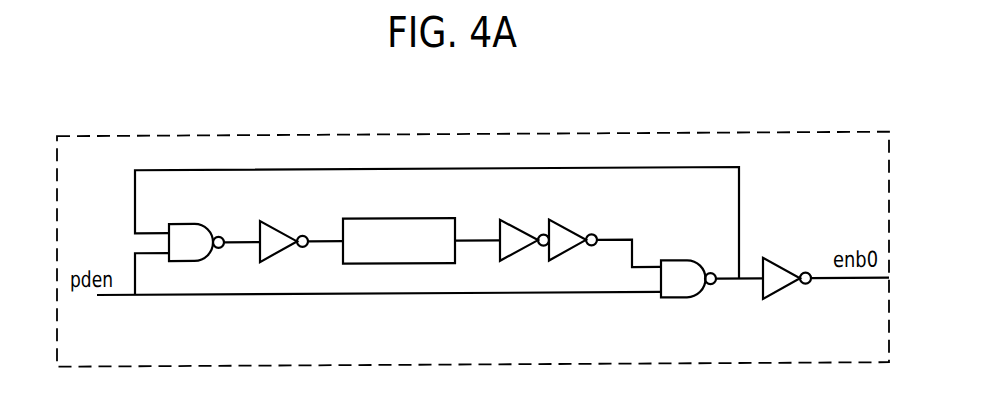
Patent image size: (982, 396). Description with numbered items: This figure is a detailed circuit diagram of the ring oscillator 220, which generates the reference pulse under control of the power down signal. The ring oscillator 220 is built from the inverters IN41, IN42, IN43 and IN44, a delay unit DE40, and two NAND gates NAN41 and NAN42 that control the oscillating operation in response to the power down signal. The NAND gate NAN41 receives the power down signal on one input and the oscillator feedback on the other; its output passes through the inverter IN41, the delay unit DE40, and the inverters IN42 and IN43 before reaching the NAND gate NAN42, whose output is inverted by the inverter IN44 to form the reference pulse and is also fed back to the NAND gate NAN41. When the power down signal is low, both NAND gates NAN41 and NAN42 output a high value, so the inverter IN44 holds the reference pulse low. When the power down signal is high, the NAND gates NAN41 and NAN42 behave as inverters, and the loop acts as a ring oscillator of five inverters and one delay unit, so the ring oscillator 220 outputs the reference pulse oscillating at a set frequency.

The ring oscillator 220 is at (812, 136).
The NAND gate NAN41 is at (211, 227).
The inverter IN41 is at (299, 227).
The delay unit DE40 is at (421, 226).
The inverter IN42 is at (519, 226).
The inverter IN43 is at (601, 229).
The NAND gate NAN42 is at (709, 295).
The inverter IN44 is at (824, 264).